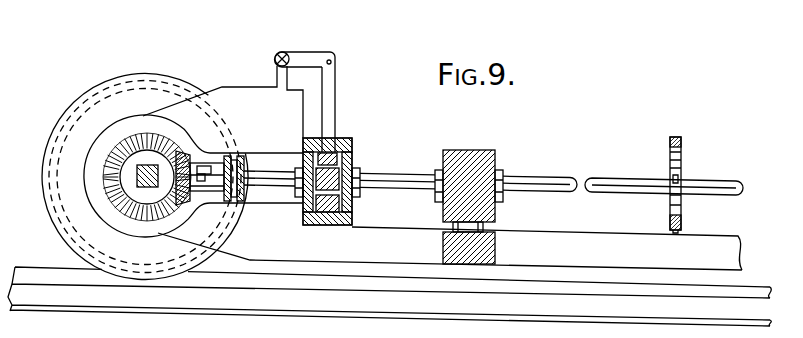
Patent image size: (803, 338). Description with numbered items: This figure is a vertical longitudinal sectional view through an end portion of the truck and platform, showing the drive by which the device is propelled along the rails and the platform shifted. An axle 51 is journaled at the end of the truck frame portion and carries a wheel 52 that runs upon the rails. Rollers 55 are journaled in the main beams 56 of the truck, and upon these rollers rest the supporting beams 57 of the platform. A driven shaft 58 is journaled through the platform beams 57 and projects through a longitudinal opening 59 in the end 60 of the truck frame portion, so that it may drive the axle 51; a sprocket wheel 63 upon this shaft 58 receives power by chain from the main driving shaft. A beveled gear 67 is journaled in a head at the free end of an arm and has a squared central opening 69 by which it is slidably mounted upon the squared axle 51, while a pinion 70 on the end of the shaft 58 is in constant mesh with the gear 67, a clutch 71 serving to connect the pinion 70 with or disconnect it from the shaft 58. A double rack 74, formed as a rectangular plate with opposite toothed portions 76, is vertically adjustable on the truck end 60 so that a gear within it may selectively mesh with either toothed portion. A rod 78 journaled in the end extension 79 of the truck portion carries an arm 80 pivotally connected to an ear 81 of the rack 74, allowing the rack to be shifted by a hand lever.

The axle 51 is at (137, 182).
The wheel 52 is at (145, 177).
The roller 55 is at (486, 228).
The main beam 56 is at (496, 252).
The supporting beam 57 is at (470, 150).
The driven shaft 58 is at (592, 170).
The longitudinal opening 59 is at (303, 196).
The end 60 is at (310, 137).
The wheel 63 is at (682, 157).
The beveled gear 67 is at (103, 176).
The squared central opening 69 is at (140, 170).
The pinion 70 is at (196, 193).
The clutch 71 is at (247, 163).
The double rack 74 is at (332, 139).
The toothed portion 76 is at (353, 156).
The rod 78 is at (275, 60).
The end extension 79 is at (193, 173).
The arm 80 is at (307, 58).
The ear 81 is at (336, 103).